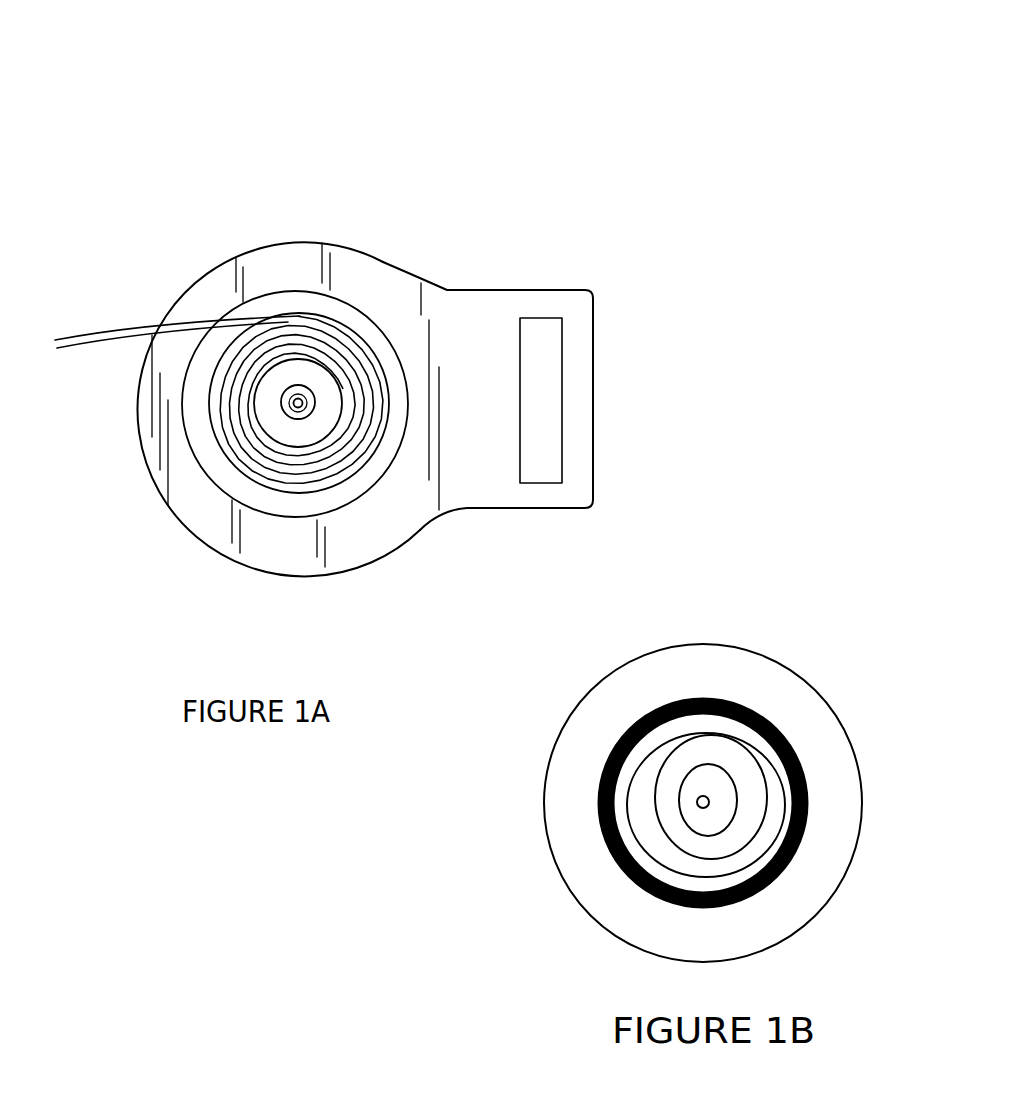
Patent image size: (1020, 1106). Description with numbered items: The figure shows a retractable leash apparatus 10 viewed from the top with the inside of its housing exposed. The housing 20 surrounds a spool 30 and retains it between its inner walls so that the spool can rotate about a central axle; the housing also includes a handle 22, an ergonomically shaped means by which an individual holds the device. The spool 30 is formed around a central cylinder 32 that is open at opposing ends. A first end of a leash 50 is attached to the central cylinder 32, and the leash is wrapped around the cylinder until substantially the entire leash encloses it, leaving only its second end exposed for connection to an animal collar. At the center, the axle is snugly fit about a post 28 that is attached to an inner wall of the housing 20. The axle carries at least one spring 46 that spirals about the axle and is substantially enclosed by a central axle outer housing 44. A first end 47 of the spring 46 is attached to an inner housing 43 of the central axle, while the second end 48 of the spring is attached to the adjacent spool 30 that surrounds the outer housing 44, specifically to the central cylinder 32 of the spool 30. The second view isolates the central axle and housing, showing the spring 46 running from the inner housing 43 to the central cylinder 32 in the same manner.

In FIG. 1A, the retractable leash apparatus 10 is at (63, 195).
In FIG. 1A, the housing 20 is at (372, 371).
In FIG. 1A, the handle 22 is at (523, 346).
In FIG. 1A, the post 28 is at (366, 296).
In FIG. 1A, the spool 30 is at (261, 451).
In FIG. 1B, the spool 30 is at (703, 783).
In FIG. 1A, the central cylinder 32 is at (331, 487).
In FIG. 1B, the central cylinder 32 is at (737, 769).
In FIG. 1A, the inner housing 43 is at (215, 523).
In FIG. 1B, the inner housing 43 is at (792, 847).
In FIG. 1A, the central axle outer housing 44 is at (356, 493).
In FIG. 1B, the spring 46 is at (634, 793).
In FIG. 1A, the first end of the spring 47 is at (404, 241).
In FIG. 1B, the first end of the spring 47 is at (802, 776).
In FIG. 1A, the second end of the spring 48 is at (398, 226).
In FIG. 1B, the second end of the spring 48 is at (653, 832).
In FIG. 1A, the leash 50 is at (236, 313).